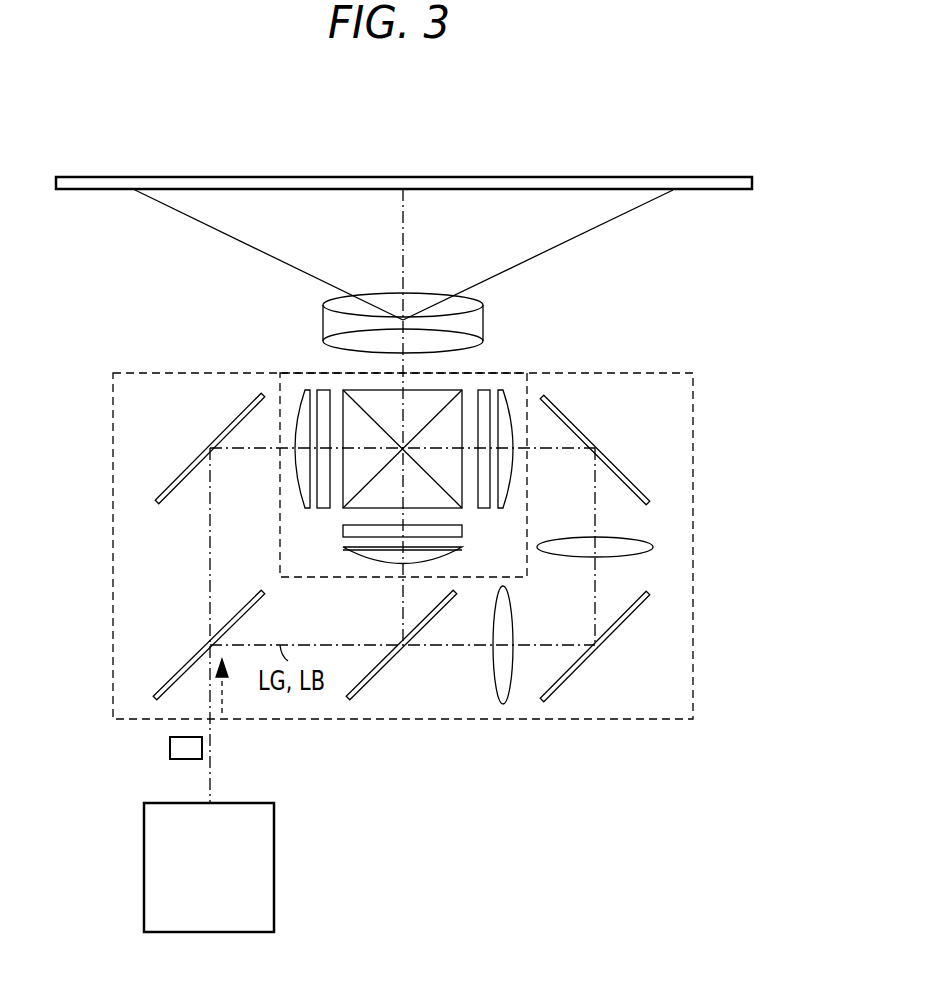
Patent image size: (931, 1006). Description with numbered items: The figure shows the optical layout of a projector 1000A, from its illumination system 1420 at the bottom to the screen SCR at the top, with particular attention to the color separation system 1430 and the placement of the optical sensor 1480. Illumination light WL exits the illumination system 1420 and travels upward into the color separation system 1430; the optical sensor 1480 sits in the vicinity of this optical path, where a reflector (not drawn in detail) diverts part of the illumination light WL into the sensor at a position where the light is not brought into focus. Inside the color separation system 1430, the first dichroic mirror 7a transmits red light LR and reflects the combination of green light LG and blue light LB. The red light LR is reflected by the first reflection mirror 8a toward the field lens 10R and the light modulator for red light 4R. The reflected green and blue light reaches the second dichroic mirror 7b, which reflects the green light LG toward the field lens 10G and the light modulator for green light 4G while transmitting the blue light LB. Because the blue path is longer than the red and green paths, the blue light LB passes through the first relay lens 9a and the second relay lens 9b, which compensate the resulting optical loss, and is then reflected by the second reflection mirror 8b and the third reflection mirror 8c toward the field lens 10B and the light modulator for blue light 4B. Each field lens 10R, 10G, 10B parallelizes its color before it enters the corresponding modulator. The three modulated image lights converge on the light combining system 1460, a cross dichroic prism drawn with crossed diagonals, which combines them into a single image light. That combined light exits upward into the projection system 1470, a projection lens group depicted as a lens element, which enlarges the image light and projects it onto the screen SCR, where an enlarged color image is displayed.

The projector 1000A is at (154, 132).
The screen SCR is at (715, 190).
The projection system 1470 is at (323, 310).
The color separation system 1430 is at (113, 535).
The light combining system 1460 is at (443, 381).
The light modulator for red light 4R is at (338, 378).
The field lens 10R is at (304, 391).
The light modulator for blue light 4B is at (484, 390).
The field lens 10B is at (505, 391).
The light modulator for green light 4G is at (343, 530).
The field lens 10G is at (343, 552).
The first reflection mirror 8a is at (186, 469).
The second reflection mirror 8b is at (569, 668).
The third reflection mirror 8c is at (619, 469).
The first dichroic mirror 7a is at (188, 666).
The second dichroic mirror 7b is at (399, 653).
The first relay lens 9a is at (494, 690).
The second relay lens 9b is at (640, 543).
The red light LR is at (207, 580).
The green light LG is at (402, 605).
The blue light LB is at (593, 602).
The illumination light WL is at (222, 703).
The optical sensor 1480 is at (168, 748).
The illumination system 1420 is at (275, 828).